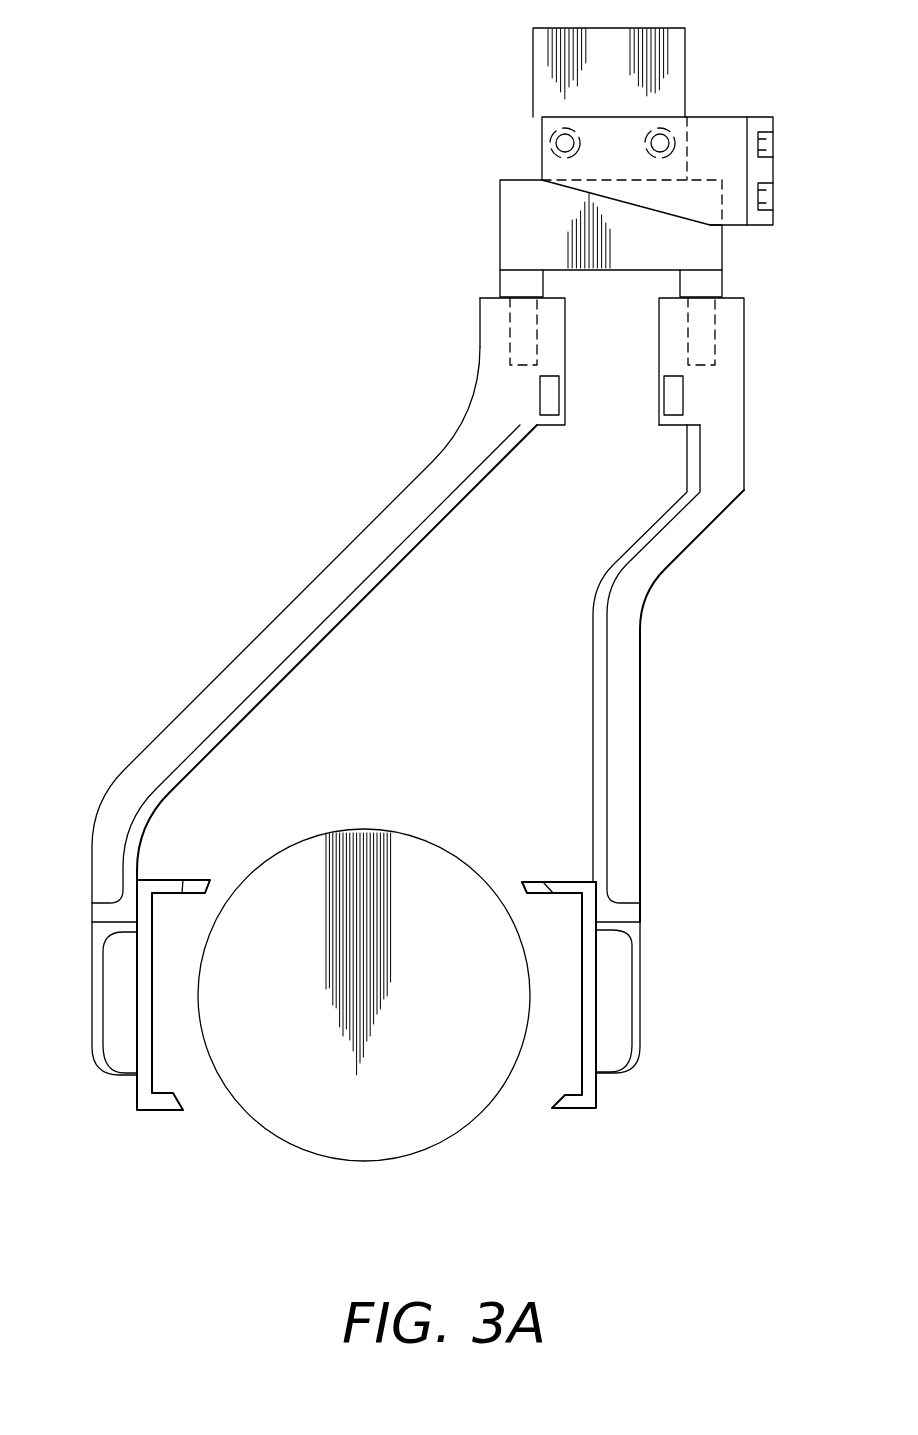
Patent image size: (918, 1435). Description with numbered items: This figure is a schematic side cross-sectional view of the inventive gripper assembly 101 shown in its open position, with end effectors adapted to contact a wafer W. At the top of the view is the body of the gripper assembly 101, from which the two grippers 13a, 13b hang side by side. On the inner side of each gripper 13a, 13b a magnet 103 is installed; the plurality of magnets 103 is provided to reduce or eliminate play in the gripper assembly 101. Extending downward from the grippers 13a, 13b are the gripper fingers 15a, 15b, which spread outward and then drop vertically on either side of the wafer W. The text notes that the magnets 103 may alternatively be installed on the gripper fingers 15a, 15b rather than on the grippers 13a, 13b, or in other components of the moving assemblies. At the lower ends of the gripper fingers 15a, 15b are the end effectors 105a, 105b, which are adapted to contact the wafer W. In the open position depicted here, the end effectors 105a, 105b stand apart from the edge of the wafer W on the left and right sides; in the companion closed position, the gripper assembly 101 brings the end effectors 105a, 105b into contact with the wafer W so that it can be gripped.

The gripper assembly 101 is at (470, 45).
The gripper 13a is at (480, 346).
The gripper 13b is at (745, 331).
The magnets 103 is at (672, 416).
The gripper finger 15a is at (228, 666).
The gripper finger 15b is at (640, 743).
The wafer W is at (383, 829).
The end effector 105a is at (165, 1112).
The end effector 105b is at (555, 1110).